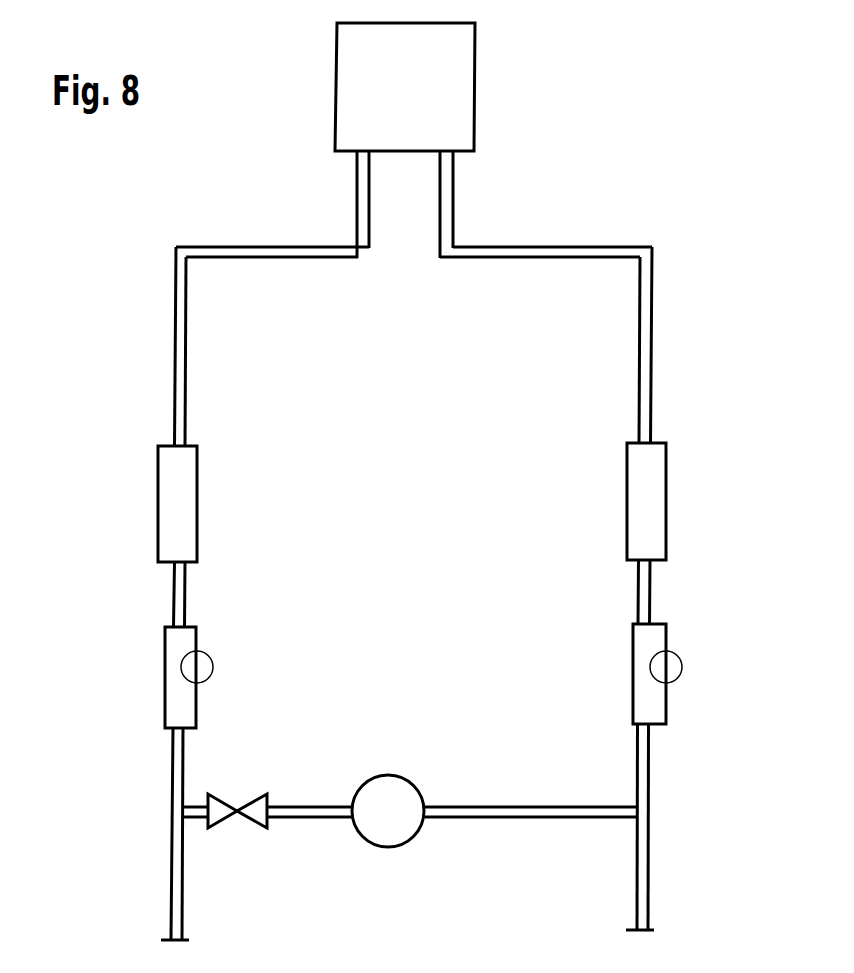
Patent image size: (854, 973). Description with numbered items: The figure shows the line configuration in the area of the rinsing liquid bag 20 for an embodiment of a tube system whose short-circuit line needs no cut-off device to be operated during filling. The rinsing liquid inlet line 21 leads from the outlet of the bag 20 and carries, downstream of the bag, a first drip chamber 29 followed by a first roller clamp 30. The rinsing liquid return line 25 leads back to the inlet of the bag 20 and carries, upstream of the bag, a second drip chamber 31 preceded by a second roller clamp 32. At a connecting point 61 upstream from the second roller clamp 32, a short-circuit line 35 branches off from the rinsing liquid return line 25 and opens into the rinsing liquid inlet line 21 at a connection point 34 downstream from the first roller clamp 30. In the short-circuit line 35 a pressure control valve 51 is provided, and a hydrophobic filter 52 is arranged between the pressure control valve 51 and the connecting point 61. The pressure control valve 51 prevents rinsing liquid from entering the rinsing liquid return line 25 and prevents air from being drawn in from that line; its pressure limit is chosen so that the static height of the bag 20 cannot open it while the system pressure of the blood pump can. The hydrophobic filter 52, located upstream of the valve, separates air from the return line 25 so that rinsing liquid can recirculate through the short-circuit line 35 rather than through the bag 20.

The rinsing liquid bag 20 is at (475, 86).
The rinsing liquid inlet line 21 is at (176, 394).
The rinsing liquid return line 25 is at (652, 377).
The first drip chamber 29 is at (185, 478).
The first roller clamp 30 is at (185, 705).
The second drip chamber 31 is at (655, 480).
The second roller clamp 32 is at (658, 706).
The connection point 34 is at (182, 810).
The short-circuit line 35 is at (323, 818).
The pressure control valve 51 is at (250, 800).
The hydrophobic filter 52 is at (412, 782).
The connecting point 61 is at (638, 813).